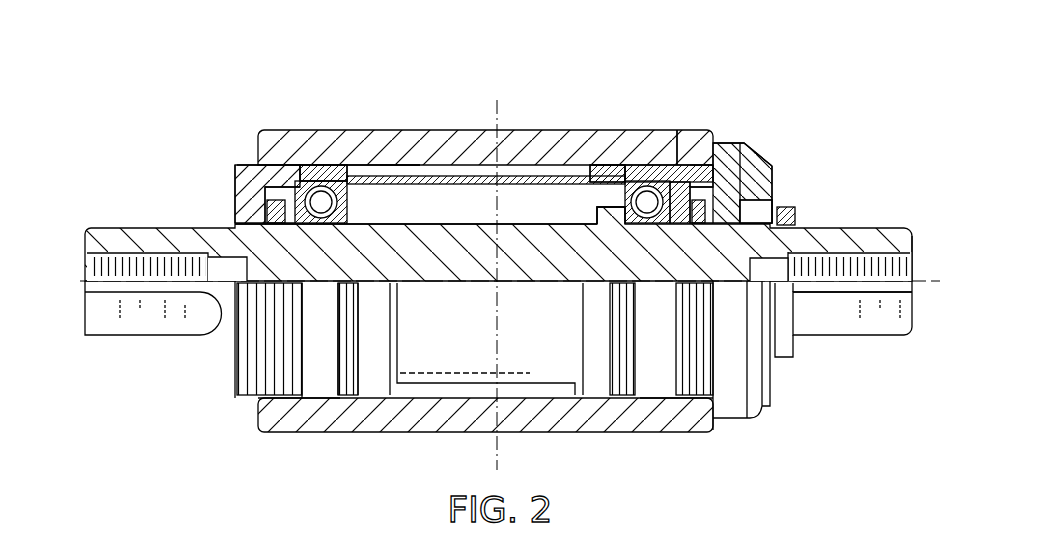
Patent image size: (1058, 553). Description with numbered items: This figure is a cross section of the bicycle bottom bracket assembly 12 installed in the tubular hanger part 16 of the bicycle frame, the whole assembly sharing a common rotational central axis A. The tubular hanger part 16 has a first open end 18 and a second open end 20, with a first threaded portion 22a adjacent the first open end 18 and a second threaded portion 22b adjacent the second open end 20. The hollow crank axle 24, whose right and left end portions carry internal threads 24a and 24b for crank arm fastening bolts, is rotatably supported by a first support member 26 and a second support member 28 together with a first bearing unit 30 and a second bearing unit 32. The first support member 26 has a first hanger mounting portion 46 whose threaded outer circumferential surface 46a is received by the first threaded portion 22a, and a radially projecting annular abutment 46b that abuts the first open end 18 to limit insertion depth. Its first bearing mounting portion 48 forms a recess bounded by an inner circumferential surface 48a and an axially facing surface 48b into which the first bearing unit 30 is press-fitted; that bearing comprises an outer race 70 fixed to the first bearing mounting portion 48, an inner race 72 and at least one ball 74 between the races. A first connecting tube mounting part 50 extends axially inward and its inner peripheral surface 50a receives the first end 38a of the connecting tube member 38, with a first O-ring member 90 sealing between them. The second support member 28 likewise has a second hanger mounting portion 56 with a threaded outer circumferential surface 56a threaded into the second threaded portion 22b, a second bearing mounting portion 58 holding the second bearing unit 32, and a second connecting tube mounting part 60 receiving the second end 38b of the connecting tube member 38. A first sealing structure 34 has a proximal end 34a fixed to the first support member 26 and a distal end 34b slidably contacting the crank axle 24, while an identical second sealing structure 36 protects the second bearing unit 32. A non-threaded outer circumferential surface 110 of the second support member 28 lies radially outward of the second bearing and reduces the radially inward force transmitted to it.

The bicycle bottom bracket assembly 12 is at (438, 160).
The tubular hanger part 16 is at (677, 128).
The first open end 18 is at (715, 143).
The second open end 20 is at (257, 150).
The first threaded portion 22a is at (746, 147).
The second threaded portion 22b is at (266, 188).
The crank axle 24 is at (871, 225).
The internal thread 24a is at (900, 250).
The internal thread 24b is at (114, 250).
The first support member 26 is at (778, 163).
The second support member 28 is at (231, 162).
The first bearing unit 30 is at (653, 230).
The second bearing unit 32 is at (321, 230).
The first sealing structure 34 is at (702, 216).
The proximal end 34a is at (773, 203).
The distal end 34b is at (746, 226).
The second sealing structure 36 is at (276, 211).
The connecting tube member 38 is at (481, 175).
The first end 38a is at (621, 176).
The second end 38b is at (350, 186).
The first hanger mounting portion 46 is at (699, 409).
The threaded outer circumferential surface 46a is at (690, 402).
The annular abutment 46b is at (706, 165).
The first bearing mounting portion 48 is at (662, 180).
The inner circumferential surface 48a is at (691, 143).
The axially facing surface 48b is at (742, 183).
The first connecting tube mounting part 50 is at (588, 162).
The inner peripheral surface 50a is at (578, 178).
The second hanger mounting portion 56 is at (291, 160).
The threaded outer circumferential surface 56a is at (407, 400).
The second bearing mounting portion 58 is at (313, 180).
The second connecting tube mounting part 60 is at (395, 162).
The outer race 70 is at (626, 194).
The inner race 72 is at (640, 232).
The roller element or ball 74 is at (612, 212).
The first O-ring member 90 is at (599, 163).
The non-threaded outer circumferential surface 110 is at (318, 400).
The rotational central axis A is at (832, 283).